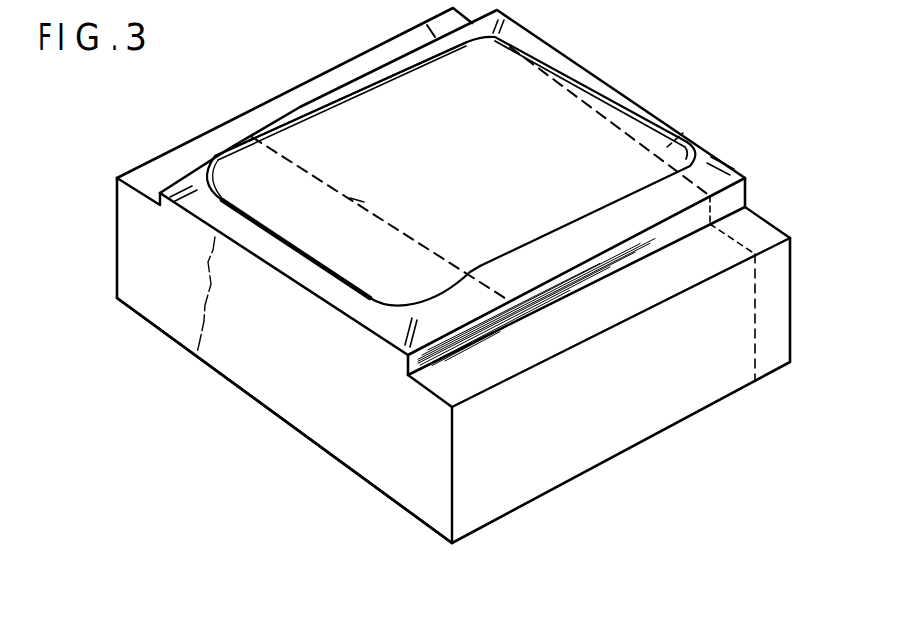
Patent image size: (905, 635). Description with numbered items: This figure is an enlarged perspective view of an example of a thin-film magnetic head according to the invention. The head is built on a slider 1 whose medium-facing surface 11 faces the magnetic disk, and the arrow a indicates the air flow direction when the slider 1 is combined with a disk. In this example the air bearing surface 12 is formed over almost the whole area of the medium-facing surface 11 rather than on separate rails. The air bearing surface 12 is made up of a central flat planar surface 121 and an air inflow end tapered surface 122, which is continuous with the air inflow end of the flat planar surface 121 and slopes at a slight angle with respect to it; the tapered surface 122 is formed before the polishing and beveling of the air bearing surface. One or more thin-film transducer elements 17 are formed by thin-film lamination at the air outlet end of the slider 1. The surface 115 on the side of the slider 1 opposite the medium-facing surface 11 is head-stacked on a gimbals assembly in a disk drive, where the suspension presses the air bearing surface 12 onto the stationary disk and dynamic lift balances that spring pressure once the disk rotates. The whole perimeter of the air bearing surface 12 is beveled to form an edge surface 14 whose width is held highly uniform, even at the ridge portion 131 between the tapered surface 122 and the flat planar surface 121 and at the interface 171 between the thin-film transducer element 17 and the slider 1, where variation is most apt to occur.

The slider 1 is at (630, 423).
The medium-facing surface 11 is at (575, 133).
The air bearing surface 12 is at (490, 103).
The edge surface 14 is at (440, 323).
The thin-film transducer element 17 is at (637, 124).
The surface on the opposite side of the slider 115 is at (245, 397).
The flat planar surface 121 is at (367, 107).
The air inflow end tapered surface 122 is at (247, 177).
The ridge portion 131 is at (357, 200).
The interface 171 is at (683, 133).
The air flow direction a is at (297, 263).